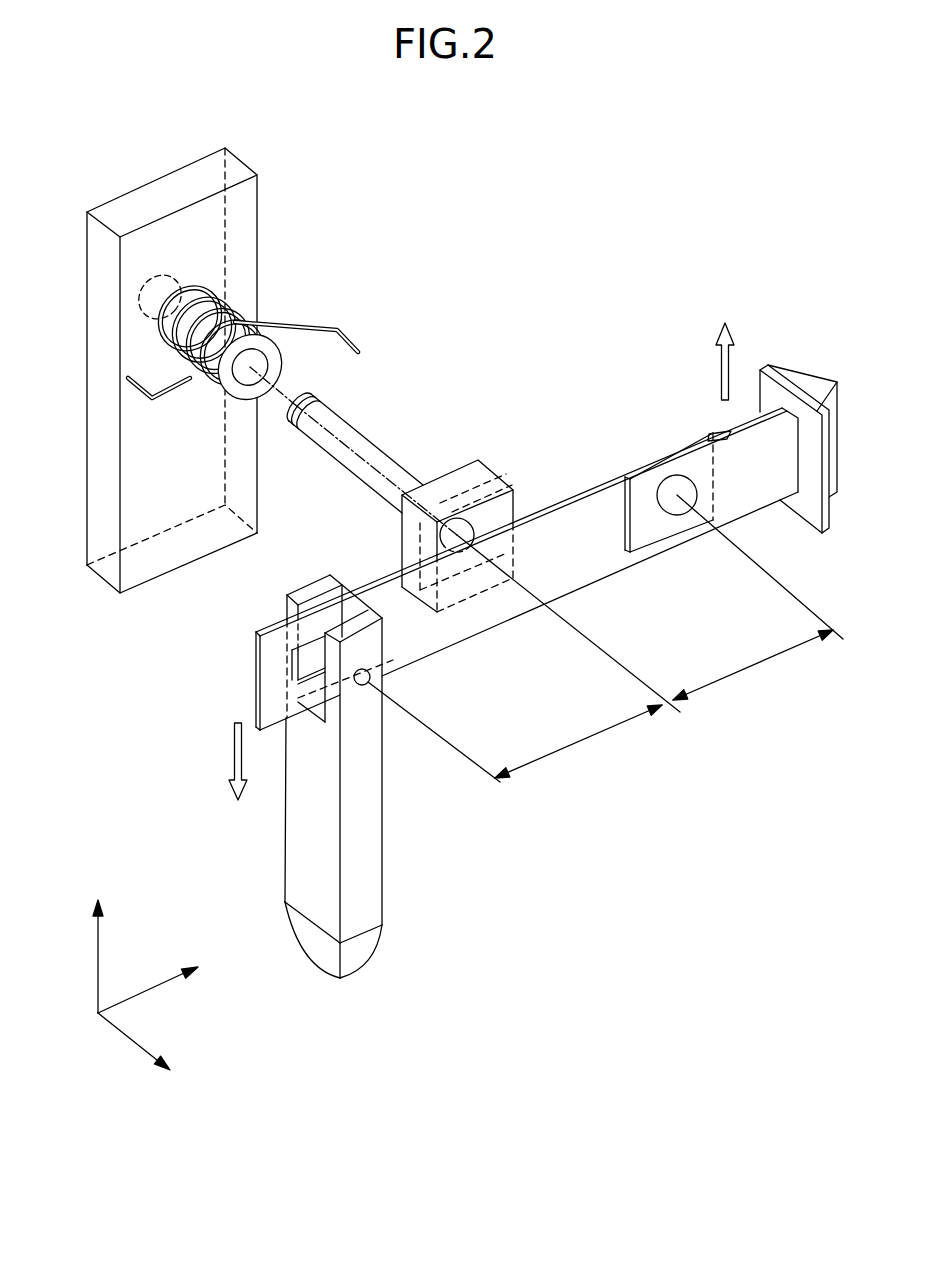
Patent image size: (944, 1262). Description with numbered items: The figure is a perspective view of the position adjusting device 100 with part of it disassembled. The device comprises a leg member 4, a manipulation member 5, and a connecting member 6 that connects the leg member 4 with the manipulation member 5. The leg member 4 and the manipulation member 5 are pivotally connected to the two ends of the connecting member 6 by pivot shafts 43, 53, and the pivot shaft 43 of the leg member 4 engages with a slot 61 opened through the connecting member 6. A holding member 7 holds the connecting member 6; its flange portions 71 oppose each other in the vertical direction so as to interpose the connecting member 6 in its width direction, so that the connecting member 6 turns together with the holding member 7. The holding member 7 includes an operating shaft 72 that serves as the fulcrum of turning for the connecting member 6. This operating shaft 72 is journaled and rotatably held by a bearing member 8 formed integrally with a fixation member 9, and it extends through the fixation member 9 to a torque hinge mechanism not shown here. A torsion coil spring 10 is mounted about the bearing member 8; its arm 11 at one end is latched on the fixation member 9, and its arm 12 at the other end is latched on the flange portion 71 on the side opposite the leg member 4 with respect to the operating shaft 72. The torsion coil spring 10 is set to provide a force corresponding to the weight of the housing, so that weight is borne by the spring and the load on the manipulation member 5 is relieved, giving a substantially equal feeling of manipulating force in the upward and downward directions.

The position adjusting device 100 is at (421, 155).
The fixation member 9 is at (243, 223).
The torsion coil spring 10 is at (238, 302).
The bearing member 8 is at (277, 367).
The arm 11 is at (122, 397).
The arm 12 is at (362, 342).
The operating shaft 72 is at (352, 430).
The holding member 7 is at (457, 516).
The flange portion 71 is at (482, 507).
The connecting member 6 is at (503, 569).
The slot 61 is at (307, 663).
The pivot shaft 53 is at (672, 510).
The manipulation member 5 is at (787, 378).
The leg member 4 is at (371, 776).
The pivot shaft 43 is at (372, 677).